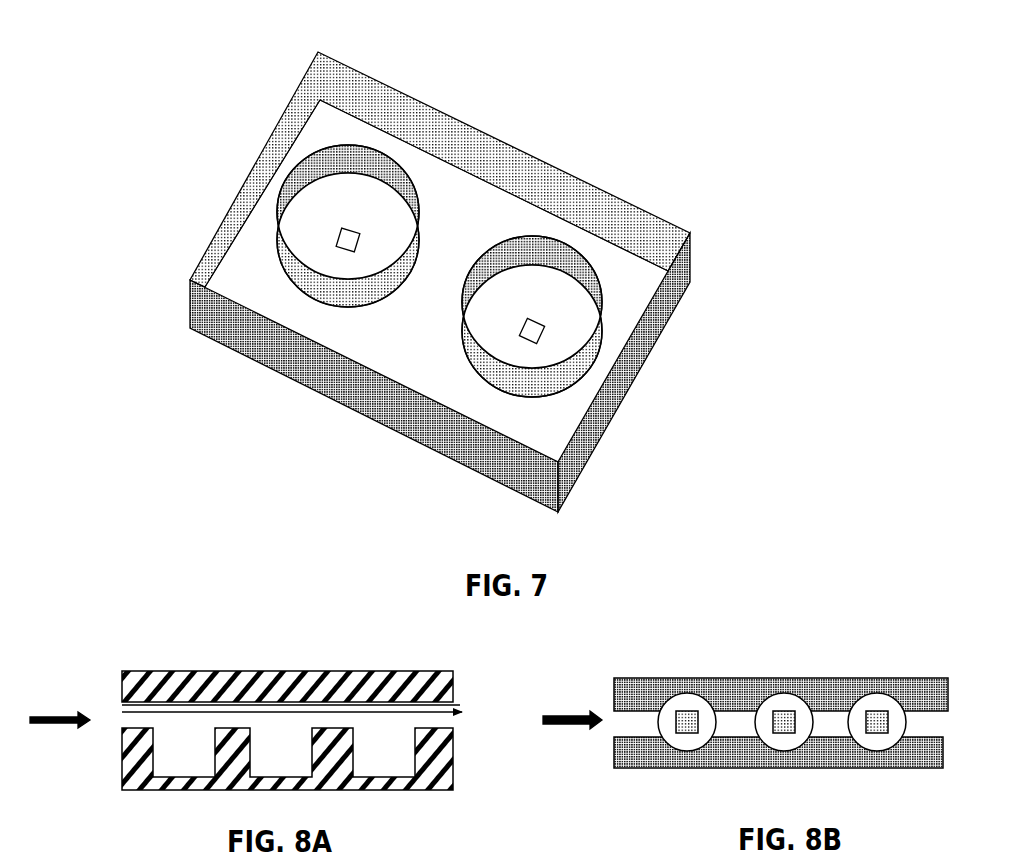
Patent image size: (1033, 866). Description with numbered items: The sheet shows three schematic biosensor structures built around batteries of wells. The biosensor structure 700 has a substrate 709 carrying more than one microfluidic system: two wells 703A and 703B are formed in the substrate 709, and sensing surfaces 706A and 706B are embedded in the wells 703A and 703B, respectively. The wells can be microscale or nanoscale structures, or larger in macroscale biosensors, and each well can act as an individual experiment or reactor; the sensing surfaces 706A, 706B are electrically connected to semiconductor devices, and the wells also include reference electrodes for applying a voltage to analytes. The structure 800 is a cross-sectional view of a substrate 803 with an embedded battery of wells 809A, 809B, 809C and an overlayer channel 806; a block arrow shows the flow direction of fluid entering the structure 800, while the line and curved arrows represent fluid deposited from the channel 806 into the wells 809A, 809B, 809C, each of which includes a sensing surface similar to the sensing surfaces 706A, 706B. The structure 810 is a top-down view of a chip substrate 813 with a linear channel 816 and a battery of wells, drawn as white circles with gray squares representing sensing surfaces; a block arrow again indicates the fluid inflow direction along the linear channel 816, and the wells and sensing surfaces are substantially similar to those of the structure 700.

In FIG. 7, the biosensor structure 700 is at (456, 262).
In FIG. 7, the well 703A is at (349, 158).
In FIG. 7, the well 703B is at (535, 253).
In FIG. 7, the sensing surface 706A is at (338, 240).
In FIG. 7, the sensing surface 706B is at (541, 331).
In FIG. 7, the substrate 709 is at (668, 298).
In FIG. 8A, the structure 800 is at (246, 672).
In FIG. 8A, the substrate 803 is at (290, 672).
In FIG. 8A, the overlayer channel 806 is at (111, 704).
In FIG. 8A, the well 809A is at (150, 713).
In FIG. 8A, the well 809B is at (240, 713).
In FIG. 8A, the well 809C is at (350, 713).
In FIG. 8B, the structure 810 is at (740, 676).
In FIG. 8B, the chip substrate 813 is at (792, 682).
In FIG. 8B, the linear channel 816 is at (608, 731).